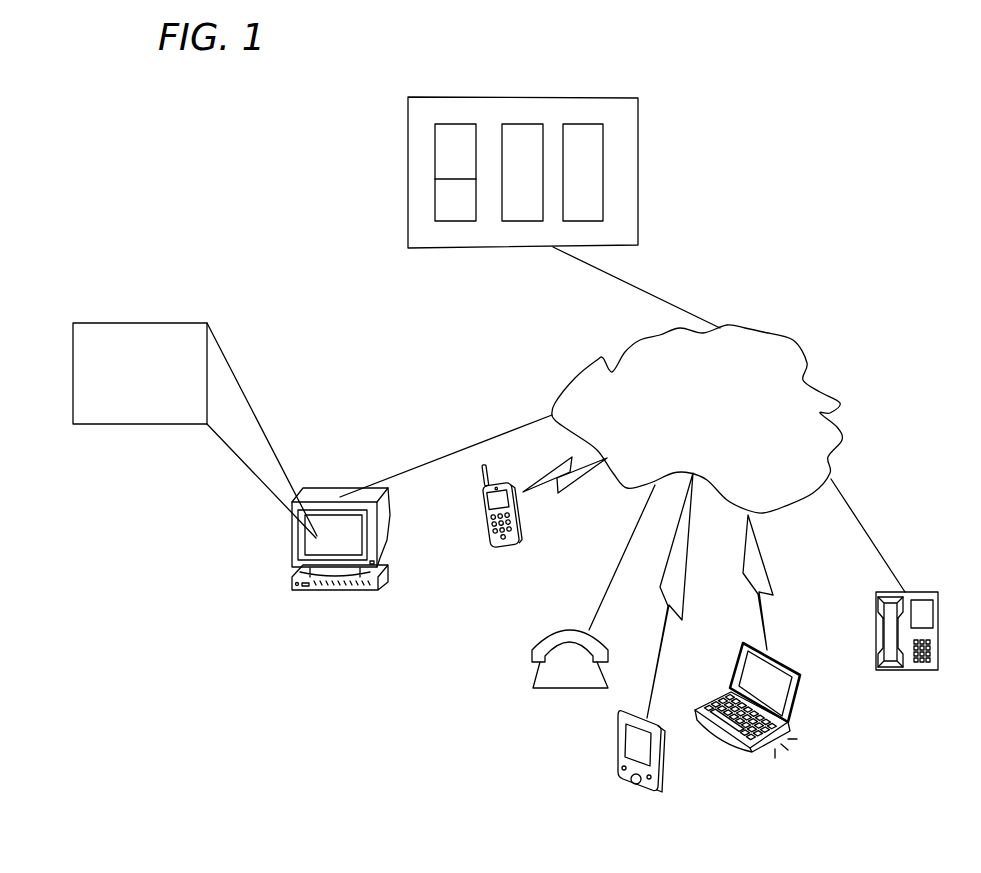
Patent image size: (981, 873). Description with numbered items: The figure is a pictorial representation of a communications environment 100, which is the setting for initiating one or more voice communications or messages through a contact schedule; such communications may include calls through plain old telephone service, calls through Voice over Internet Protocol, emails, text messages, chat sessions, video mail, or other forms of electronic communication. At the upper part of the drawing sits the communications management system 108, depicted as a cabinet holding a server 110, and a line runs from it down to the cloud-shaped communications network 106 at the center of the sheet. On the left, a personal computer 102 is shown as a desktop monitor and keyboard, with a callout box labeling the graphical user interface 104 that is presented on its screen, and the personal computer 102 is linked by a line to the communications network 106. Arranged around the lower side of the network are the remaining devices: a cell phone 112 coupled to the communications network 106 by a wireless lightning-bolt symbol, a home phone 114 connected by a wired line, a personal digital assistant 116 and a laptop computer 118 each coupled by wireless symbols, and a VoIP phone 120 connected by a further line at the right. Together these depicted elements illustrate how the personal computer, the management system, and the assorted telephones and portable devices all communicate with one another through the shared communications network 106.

The communications environment 100 is at (113, 148).
The personal computer 102 is at (292, 575).
The graphical user interface 104 is at (124, 418).
The communications network 106 is at (682, 442).
The communications management system 108 is at (623, 110).
The server 110 is at (590, 205).
The cell phone 112 is at (483, 516).
The home phone 114 is at (540, 688).
The personal digital assistant 116 is at (627, 785).
The laptop computer 118 is at (800, 697).
The VoIP phone 120 is at (907, 672).